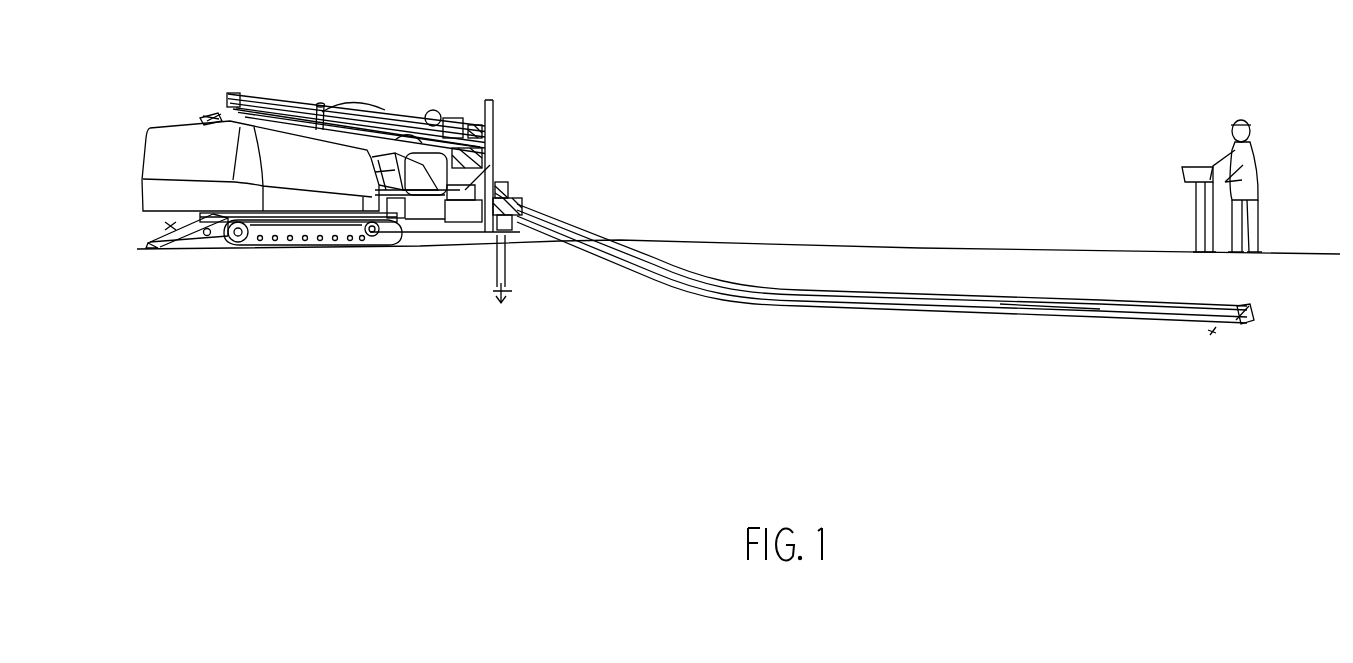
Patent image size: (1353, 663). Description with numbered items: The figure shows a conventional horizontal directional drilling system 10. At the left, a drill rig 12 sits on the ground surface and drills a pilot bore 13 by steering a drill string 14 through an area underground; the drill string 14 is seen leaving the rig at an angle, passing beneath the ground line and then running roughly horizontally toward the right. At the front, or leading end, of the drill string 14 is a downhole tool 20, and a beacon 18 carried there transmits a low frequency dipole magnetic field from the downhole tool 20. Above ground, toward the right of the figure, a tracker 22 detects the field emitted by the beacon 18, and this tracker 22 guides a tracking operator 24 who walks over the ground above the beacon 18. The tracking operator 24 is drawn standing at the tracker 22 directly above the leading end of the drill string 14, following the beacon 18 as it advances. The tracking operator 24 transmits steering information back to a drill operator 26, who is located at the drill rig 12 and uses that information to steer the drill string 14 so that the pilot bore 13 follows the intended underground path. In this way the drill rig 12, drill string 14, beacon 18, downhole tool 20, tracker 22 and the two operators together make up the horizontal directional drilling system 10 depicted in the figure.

The horizontal directional drilling system 10 is at (299, 58).
The drill rig 12 is at (165, 127).
The pilot bore 13 is at (1090, 328).
The drill string 14 is at (590, 237).
The beacon 18 is at (1235, 303).
The downhole tool 20 is at (1212, 337).
The tracker 22 is at (1170, 160).
The tracking operator 24 is at (1250, 108).
The drill operator 26 is at (430, 112).